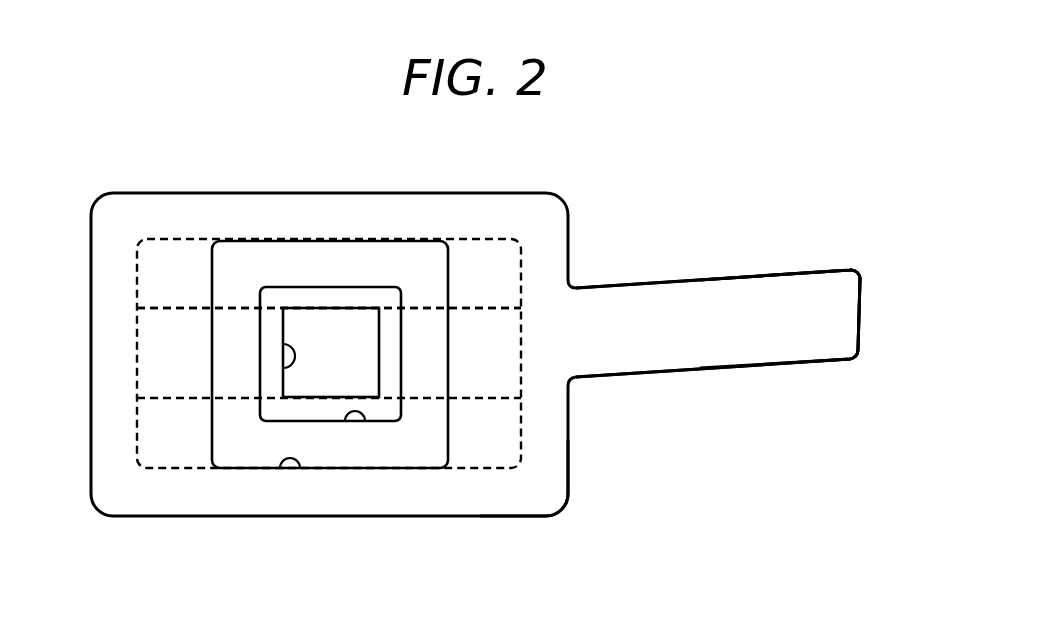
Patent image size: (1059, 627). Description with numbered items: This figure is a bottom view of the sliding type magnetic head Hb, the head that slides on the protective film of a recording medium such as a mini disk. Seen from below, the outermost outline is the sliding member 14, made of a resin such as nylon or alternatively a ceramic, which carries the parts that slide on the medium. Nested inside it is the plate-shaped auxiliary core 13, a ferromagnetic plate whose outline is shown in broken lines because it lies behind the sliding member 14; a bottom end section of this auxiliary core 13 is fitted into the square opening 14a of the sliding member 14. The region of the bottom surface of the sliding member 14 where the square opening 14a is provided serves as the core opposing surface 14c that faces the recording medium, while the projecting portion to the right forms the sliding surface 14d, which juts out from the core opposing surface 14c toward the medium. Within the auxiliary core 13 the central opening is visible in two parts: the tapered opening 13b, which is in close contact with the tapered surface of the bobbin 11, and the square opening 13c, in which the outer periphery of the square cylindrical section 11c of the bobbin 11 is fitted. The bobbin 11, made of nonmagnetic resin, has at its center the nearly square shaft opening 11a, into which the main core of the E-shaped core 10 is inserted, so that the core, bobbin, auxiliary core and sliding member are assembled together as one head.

The E-shaped core 10 is at (473, 296).
The bobbin 11 is at (367, 278).
The shaft opening 11a is at (283, 371).
The square cylindrical section 11c is at (296, 297).
The auxiliary core 13 is at (128, 457).
The tapered opening 13b is at (228, 455).
The square opening 13c is at (367, 421).
The sliding member 14 is at (580, 437).
The square opening 14a is at (301, 468).
The core opposing surface 14c is at (501, 498).
The sliding surface 14d is at (732, 285).
The sliding type magnetic head Hb is at (640, 247).